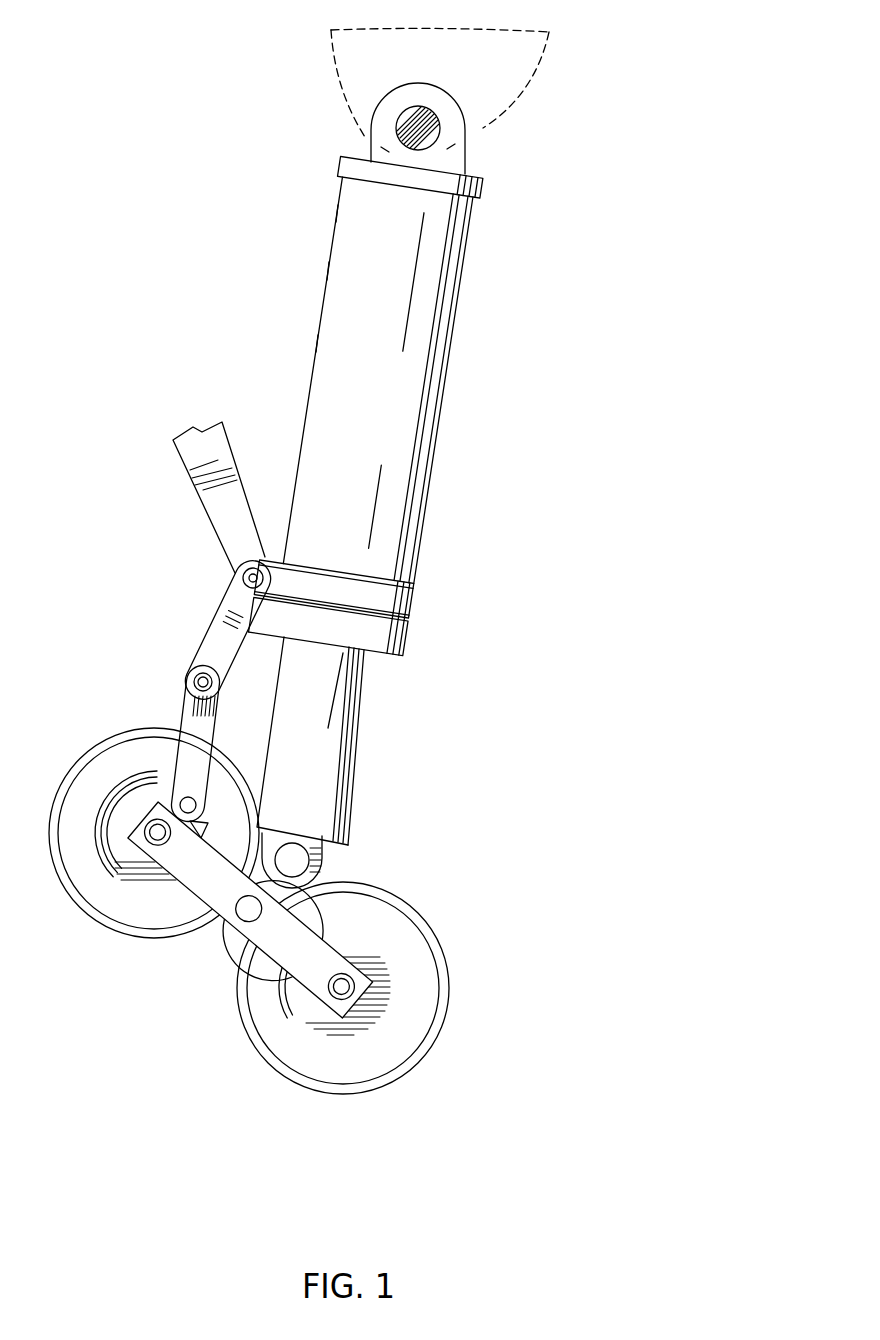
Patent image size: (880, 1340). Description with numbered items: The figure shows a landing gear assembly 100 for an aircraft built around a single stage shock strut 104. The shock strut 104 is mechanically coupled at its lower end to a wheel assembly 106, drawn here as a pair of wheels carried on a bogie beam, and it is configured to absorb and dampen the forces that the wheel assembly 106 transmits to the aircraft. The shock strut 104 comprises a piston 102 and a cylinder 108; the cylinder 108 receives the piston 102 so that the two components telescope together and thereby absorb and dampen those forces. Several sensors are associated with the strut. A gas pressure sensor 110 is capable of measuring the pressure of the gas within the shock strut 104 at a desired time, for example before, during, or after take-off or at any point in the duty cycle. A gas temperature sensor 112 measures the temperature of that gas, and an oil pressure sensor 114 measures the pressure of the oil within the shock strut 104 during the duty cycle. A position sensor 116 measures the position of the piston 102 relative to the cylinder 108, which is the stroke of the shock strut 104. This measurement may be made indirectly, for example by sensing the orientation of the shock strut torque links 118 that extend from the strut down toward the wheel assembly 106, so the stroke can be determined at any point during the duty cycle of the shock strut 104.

The landing gear assembly 100 is at (613, 168).
The piston 102 is at (343, 783).
The shock strut 104 is at (462, 281).
The wheel assembly 106 is at (430, 943).
The cylinder 108 is at (393, 468).
The gas pressure sensor 110 is at (338, 213).
The gas temperature sensor 112 is at (350, 268).
The oil pressure sensor 114 is at (330, 342).
The position sensor 116 is at (368, 653).
The shock strut torque links 118 is at (187, 670).